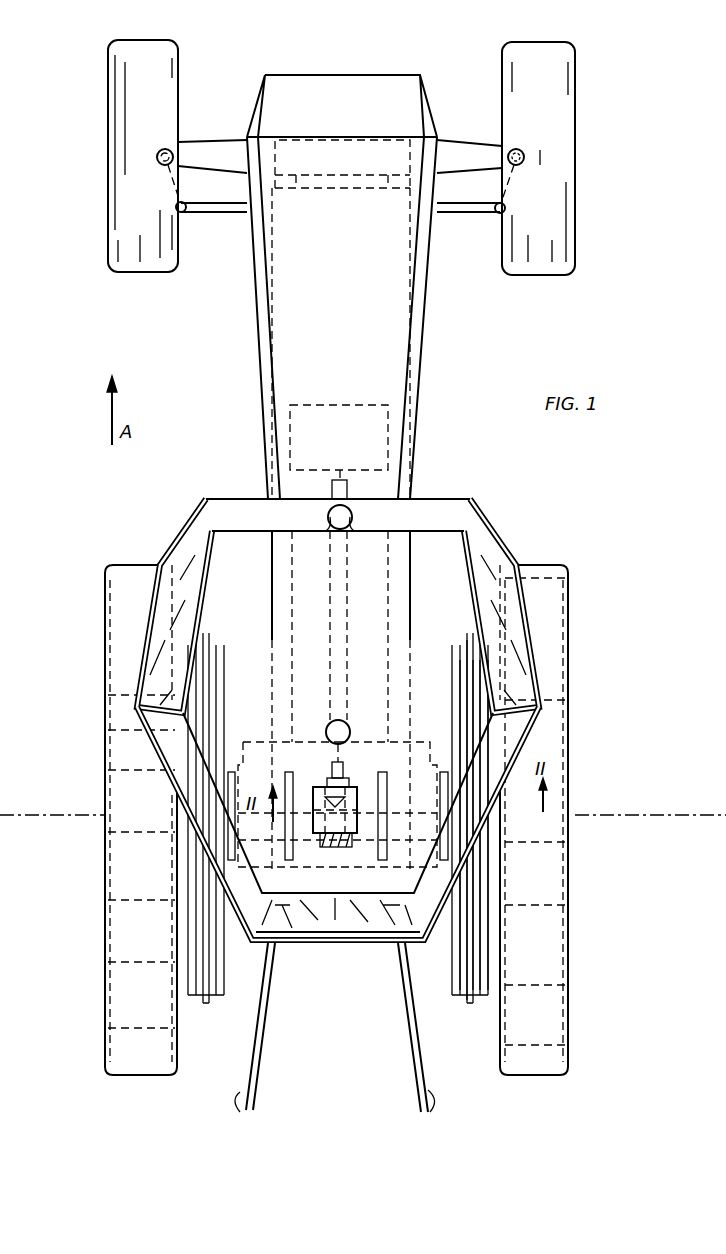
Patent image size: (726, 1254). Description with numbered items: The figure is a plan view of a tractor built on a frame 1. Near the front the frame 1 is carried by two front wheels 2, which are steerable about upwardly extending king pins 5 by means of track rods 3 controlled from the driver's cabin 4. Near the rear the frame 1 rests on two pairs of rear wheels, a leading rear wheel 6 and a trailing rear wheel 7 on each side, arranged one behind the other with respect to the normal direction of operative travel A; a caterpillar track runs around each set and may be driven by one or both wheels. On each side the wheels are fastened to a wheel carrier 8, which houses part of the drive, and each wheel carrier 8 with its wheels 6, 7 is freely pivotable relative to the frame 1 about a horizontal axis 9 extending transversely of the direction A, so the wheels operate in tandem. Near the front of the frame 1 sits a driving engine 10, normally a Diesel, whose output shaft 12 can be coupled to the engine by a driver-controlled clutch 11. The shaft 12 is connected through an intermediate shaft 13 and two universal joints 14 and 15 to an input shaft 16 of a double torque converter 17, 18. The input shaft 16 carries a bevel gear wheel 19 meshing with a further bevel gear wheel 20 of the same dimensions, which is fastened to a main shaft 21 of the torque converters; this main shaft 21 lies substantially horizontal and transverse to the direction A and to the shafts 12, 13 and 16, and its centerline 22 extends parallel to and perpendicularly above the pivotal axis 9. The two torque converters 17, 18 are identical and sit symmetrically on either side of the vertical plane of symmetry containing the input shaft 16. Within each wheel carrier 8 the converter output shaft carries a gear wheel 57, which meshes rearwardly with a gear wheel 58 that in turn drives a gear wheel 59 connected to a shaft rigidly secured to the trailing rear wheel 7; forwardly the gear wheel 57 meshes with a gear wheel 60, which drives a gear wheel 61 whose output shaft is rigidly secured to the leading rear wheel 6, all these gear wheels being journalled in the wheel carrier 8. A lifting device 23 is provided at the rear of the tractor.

The frame 1 is at (266, 591).
The front wheels 2 is at (173, 84).
The track rods 3 is at (452, 214).
The driver's cabin 4 is at (474, 498).
The king pins 5 is at (160, 165).
The leading rear wheel 6 is at (104, 621).
The trailing rear wheel 7 is at (102, 956).
The wheel carrier 8 is at (210, 1000).
The horizontal axis 9 is at (62, 815).
The driving engine 10 is at (257, 286).
The clutch 11 is at (388, 430).
The output shaft 12 is at (333, 486).
The intermediate shaft 13 is at (347, 622).
The universal joint 14 is at (334, 529).
The universal joint 15 is at (327, 728).
The input shaft 16 is at (350, 750).
The torque converter 17 is at (262, 766).
The torque converter 18 is at (405, 766).
The bevel gear wheel 19 is at (331, 769).
The bevel gear wheel 20 is at (362, 790).
The main shaft 21 is at (333, 836).
The centerline 22 is at (592, 820).
The lifting device 23 is at (408, 1000).
The gear wheel 57 is at (488, 850).
The gear wheel 58 is at (481, 894).
The gear wheel 59 is at (484, 939).
The gear wheel 60 is at (462, 712).
The gear wheel 61 is at (467, 662).